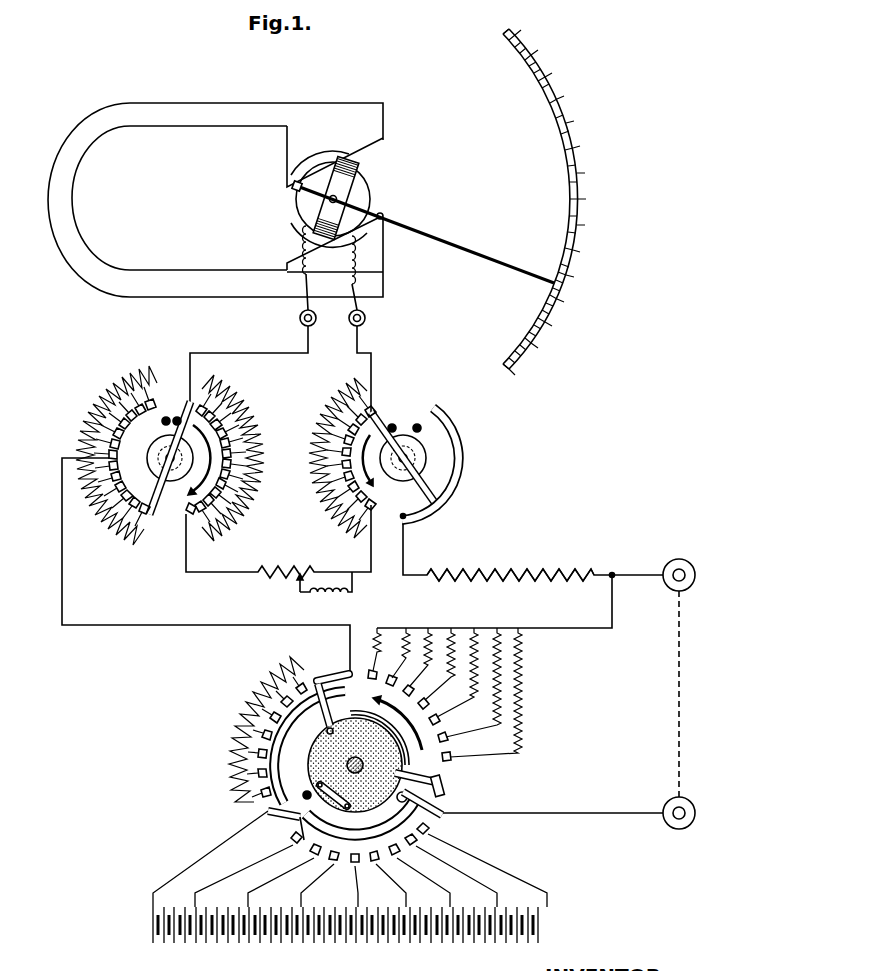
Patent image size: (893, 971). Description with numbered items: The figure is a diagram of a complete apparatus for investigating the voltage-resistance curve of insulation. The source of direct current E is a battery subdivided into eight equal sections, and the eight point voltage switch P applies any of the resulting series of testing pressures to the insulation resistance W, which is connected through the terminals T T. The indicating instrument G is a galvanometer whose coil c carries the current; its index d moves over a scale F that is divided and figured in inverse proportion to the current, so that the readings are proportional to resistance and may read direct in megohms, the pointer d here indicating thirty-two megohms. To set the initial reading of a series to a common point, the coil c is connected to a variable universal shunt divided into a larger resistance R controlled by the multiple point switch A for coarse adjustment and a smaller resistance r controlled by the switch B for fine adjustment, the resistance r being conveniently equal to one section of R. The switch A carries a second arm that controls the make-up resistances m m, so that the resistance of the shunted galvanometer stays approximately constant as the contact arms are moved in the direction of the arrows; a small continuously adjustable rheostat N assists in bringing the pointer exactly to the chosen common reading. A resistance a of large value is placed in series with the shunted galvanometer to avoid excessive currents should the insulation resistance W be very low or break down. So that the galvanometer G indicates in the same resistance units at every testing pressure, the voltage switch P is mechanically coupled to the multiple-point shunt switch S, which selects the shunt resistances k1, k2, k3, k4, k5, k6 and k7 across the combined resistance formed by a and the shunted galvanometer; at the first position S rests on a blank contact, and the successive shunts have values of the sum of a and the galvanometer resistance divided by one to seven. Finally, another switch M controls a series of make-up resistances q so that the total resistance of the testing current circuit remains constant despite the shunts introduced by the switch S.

The indicating instrument G is at (215, 200).
The galvanometer coil c is at (352, 163).
The index d is at (423, 232).
The scale F is at (556, 193).
The coarse shunt switch A is at (178, 435).
The make-up resistances m is at (111, 462).
The larger shunt resistance R is at (229, 458).
The fine shunt switch B is at (411, 456).
The smaller shunt resistance r is at (342, 458).
The continuously adjustable rheostat N is at (316, 566).
The series resistance a is at (510, 566).
The terminals T is at (536, 695).
The insulation resistance W is at (679, 694).
The shunt resistance k1 is at (487, 684).
The shunt resistance k2 is at (474, 674).
The shunt resistance k3 is at (458, 664).
The shunt resistance k4 is at (440, 656).
The shunt resistance k5 is at (421, 649).
The shunt resistance k6 is at (401, 645).
The shunt resistance k7 is at (376, 641).
The make-up resistances q is at (259, 729).
The make-up switch M is at (327, 704).
The multiple-point shunt switch S is at (419, 774).
The multiple point voltage switch P is at (355, 765).
The source of direct current E is at (354, 888).